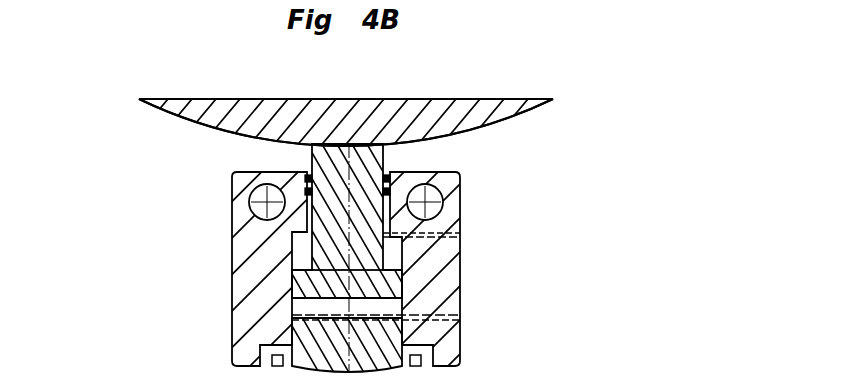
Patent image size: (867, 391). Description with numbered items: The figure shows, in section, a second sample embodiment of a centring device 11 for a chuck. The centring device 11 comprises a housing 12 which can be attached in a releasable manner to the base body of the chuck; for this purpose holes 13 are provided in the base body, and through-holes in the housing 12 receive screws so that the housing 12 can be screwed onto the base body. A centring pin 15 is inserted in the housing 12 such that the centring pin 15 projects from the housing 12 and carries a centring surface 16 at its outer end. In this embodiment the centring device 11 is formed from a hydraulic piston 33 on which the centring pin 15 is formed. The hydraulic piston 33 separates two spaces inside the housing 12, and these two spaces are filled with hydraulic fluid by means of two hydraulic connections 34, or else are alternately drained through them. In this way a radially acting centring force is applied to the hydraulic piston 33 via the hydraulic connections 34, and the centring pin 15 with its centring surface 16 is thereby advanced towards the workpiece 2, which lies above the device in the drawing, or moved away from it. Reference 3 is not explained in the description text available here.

The workpiece 2 is at (443, 123).
The lens lower surface 3 is at (503, 122).
The centring device 11 is at (615, 110).
The housing 12 is at (258, 293).
The holes 13 is at (437, 205).
The centring pin 15 is at (328, 165).
The centring surface 16 is at (405, 108).
The hydraulic piston 33 is at (367, 262).
The hydraulic connections 34 is at (452, 240).